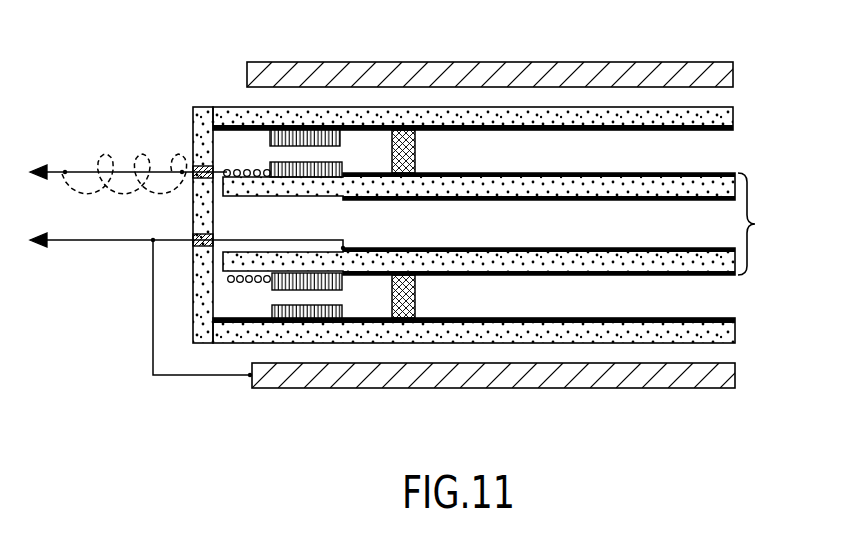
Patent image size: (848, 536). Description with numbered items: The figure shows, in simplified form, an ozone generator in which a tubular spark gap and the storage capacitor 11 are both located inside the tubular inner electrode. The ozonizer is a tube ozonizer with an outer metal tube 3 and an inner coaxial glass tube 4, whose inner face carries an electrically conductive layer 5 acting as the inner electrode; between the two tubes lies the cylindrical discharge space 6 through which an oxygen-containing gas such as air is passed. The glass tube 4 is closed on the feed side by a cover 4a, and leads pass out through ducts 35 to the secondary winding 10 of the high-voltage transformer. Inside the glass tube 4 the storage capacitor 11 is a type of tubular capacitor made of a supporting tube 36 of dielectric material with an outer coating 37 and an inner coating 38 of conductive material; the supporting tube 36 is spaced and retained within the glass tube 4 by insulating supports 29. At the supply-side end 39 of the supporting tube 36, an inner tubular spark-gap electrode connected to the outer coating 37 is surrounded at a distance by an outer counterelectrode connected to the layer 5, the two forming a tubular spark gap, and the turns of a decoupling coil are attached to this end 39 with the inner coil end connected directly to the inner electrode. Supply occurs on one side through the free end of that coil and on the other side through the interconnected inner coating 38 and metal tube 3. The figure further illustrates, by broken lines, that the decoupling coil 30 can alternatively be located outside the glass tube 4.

The outer metal tube 3 is at (707, 78).
The glass tube 4 is at (645, 118).
The cover 4a is at (203, 125).
The electrically conductive layer 5 is at (594, 133).
The discharge space 6 is at (547, 97).
The secondary winding 10 is at (50, 223).
The storage capacitor 11 is at (762, 224).
The supports 29 is at (410, 131).
The decoupling coil 30 is at (187, 244).
The ducts 35 is at (192, 165).
The supporting tube 36 is at (730, 258).
The outer coating 37 is at (706, 176).
The inner coating 38 is at (637, 249).
The end of the tube 39 is at (245, 187).